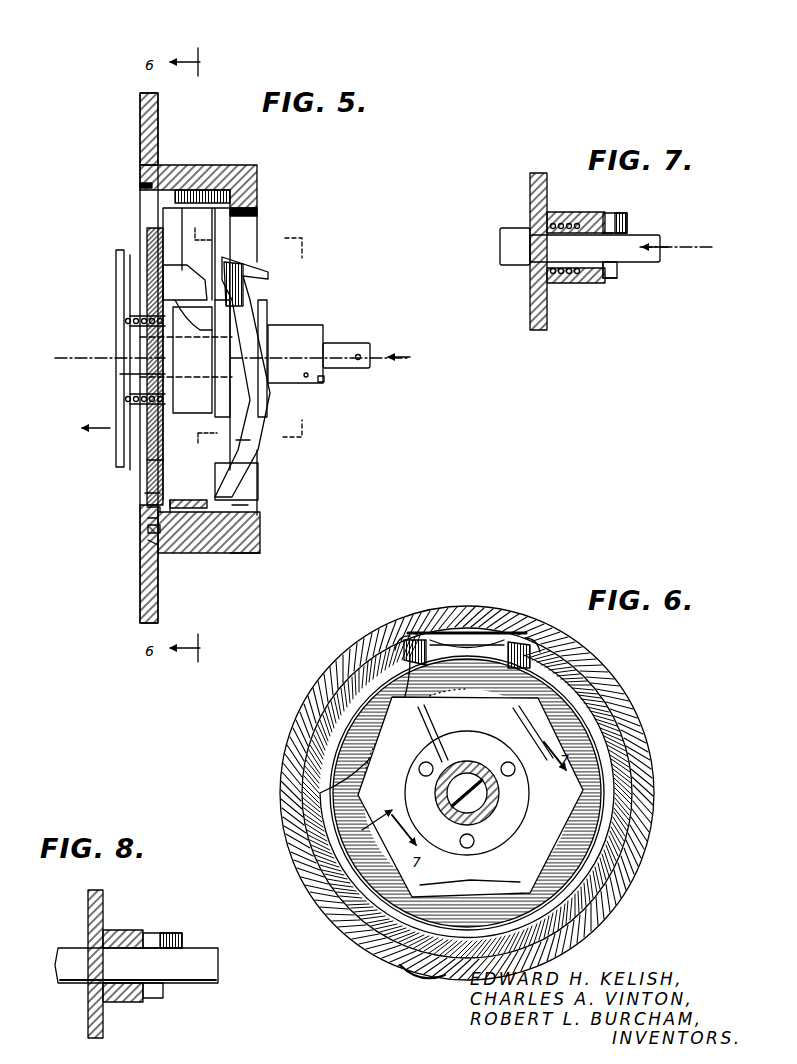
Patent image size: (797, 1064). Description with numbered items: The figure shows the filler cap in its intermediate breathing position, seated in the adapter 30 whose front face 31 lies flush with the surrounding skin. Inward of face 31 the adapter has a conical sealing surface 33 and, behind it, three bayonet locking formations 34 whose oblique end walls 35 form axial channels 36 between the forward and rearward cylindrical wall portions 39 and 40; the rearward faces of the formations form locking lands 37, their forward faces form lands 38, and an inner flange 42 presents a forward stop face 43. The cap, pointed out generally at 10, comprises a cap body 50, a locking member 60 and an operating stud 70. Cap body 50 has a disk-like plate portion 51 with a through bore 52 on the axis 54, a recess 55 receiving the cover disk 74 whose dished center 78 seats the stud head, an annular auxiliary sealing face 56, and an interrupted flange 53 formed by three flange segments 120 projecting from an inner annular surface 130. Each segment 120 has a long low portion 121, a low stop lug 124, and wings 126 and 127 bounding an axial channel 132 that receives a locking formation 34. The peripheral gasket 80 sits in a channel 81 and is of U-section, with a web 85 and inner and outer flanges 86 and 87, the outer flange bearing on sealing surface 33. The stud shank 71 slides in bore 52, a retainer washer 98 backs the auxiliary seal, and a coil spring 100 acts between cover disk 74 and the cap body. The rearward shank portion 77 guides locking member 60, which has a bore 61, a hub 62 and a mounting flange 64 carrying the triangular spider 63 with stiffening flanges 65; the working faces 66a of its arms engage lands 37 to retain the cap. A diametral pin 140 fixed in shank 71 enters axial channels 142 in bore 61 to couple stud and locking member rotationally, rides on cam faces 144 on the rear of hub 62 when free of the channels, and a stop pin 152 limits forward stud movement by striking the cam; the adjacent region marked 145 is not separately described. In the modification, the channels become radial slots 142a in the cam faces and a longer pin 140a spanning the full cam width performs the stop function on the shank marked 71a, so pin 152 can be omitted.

In FIG. 5, the clutch assembly / shaft end 10 is at (362, 371).
In FIG. 6, the clutch assembly / shaft end 10 is at (477, 820).
In FIG. 5, the adapter 30 is at (262, 196).
In FIG. 6, the adapter 30 is at (486, 607).
In FIG. 5, the front face 31 is at (140, 145).
In FIG. 5, the annular sealing surface 33 is at (145, 193).
In FIG. 5, the locking formations 34 is at (206, 552).
In FIG. 6, the locking formations 34 is at (592, 700).
In FIG. 5, the end walls 35 is at (238, 192).
In FIG. 6, the end walls 35 is at (546, 651).
In FIG. 5, the axial channels 36 is at (215, 190).
In FIG. 6, the axial channels 36 is at (521, 637).
In FIG. 5, the rearward lands 37 is at (240, 556).
In FIG. 5, the forward lands 38 is at (193, 552).
In FIG. 5, the forward cylindrical wall portion 39 is at (177, 552).
In FIG. 6, the forward cylindrical wall portion 39 is at (448, 630).
In FIG. 5, the rearward cylindrical wall portion 40 is at (245, 556).
In FIG. 5, the inner flange 42 is at (258, 517).
In FIG. 5, the forward annular face 43 is at (240, 506).
In FIG. 5, the cap body 50 is at (143, 237).
In FIG. 6, the cap body 50 is at (385, 668).
In FIG. 5, the plate portion 51 is at (150, 289).
In FIG. 6, the plate portion 51 is at (470, 788).
In FIG. 5, the through bore 52 is at (160, 357).
In FIG. 5, the interrupted flange 53 is at (193, 500).
In FIG. 6, the interrupted flange 53 is at (435, 970).
In FIG. 5, the axis 54 is at (75, 356).
In FIG. 7, the axis 54 is at (712, 246).
In FIG. 6, the axis 54 is at (480, 788).
In FIG. 5, the recess 55 is at (146, 466).
In FIG. 5, the annular face 56 is at (182, 337).
In FIG. 5, the locking member 60 is at (249, 284).
In FIG. 6, the locking member 60 is at (380, 827).
In FIG. 6, the axial bore 61 is at (460, 786).
In FIG. 5, the hub portion 62 is at (305, 324).
In FIG. 7, the hub portion 62 is at (598, 288).
In FIG. 8, the hub portion 62 is at (126, 928).
In FIG. 6, the hub portion 62 is at (470, 760).
In FIG. 5, the spider 63 is at (265, 447).
In FIG. 6, the spider 63 is at (476, 702).
In FIG. 5, the axial mounting flange 64 is at (266, 310).
In FIG. 6, the axial mounting flange 64 is at (448, 740).
In FIG. 5, the stiffening flanges 65 is at (250, 262).
In FIG. 6, the stiffening flanges 65 is at (560, 815).
In FIG. 5, the working faces 66a is at (200, 244).
In FIG. 7, the operating member 70 is at (502, 266).
In FIG. 5, the shank 71 is at (223, 358).
In FIG. 7, the shank 71 is at (515, 246).
In FIG. 8, the sleeve (modified) 71a is at (136, 965).
In FIG. 5, the cover disk 74 is at (123, 390).
In FIG. 7, the rearward shank portion 77 is at (595, 248).
In FIG. 6, the rearward shank portion 77 is at (496, 800).
In FIG. 5, the dished central portion 78 is at (125, 322).
In FIG. 5, the sealing gasket 80 is at (143, 510).
In FIG. 5, the peripheral channel 81 is at (148, 493).
In FIG. 5, the web 85 is at (147, 522).
In FIG. 5, the inner flange 86 is at (178, 498).
In FIG. 5, the outer flange 87 is at (150, 553).
In FIG. 5, the retainer washer 98 is at (140, 374).
In FIG. 5, the coil spring 100 is at (125, 404).
In FIG. 5, the flange segments 120 is at (170, 278).
In FIG. 6, the flange segments 120 is at (345, 680).
In FIG. 5, the low uniform portion 121 is at (220, 552).
In FIG. 6, the stop lug 124 is at (518, 632).
In FIG. 6, the right hand wing 126 is at (422, 645).
In FIG. 6, the left hand wings 127 is at (530, 650).
In FIG. 6, the inner annular surface 130 is at (612, 856).
In FIG. 6, the axial channels 132 is at (332, 735).
In FIG. 5, the diametral pin 140 is at (305, 372).
In FIG. 7, the diametral pin 140 is at (604, 226).
In FIG. 6, the diametral pin 140 is at (499, 791).
In FIG. 8, the coupling pin 140a is at (160, 935).
In FIG. 7, the axial channels 142 is at (560, 222).
In FIG. 6, the axial channels 142 is at (455, 815).
In FIG. 8, the radial slots 142a is at (152, 1000).
In FIG. 7, the cam faces 144 is at (622, 266).
In FIG. 7, the threaded portion 145 is at (630, 228).
In FIG. 8, the threaded portion 145 is at (185, 940).
In FIG. 5, the stop pin 152 is at (323, 381).
In FIG. 7, the stop pin 152 is at (625, 222).